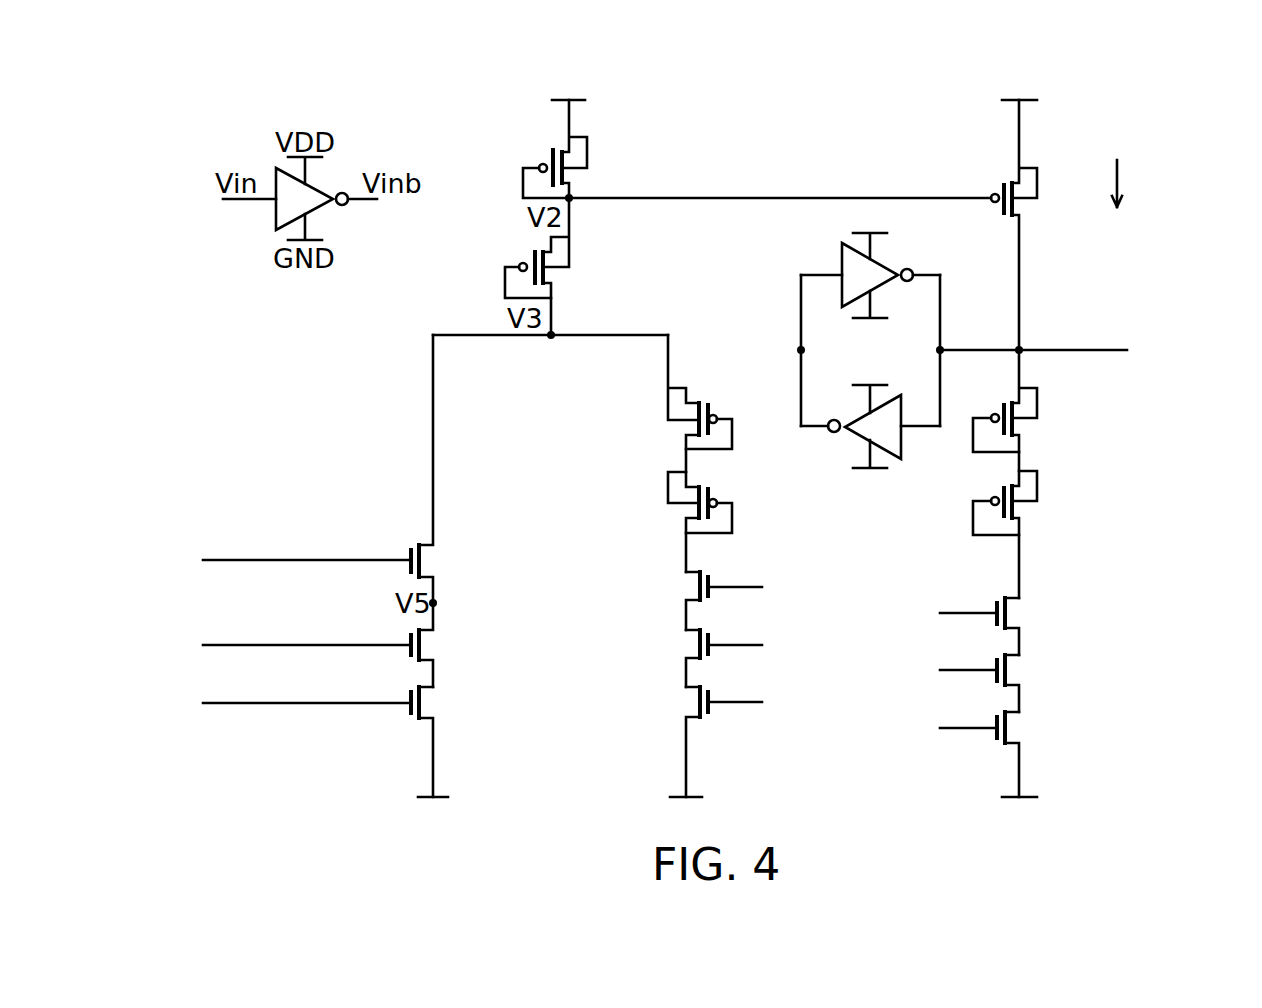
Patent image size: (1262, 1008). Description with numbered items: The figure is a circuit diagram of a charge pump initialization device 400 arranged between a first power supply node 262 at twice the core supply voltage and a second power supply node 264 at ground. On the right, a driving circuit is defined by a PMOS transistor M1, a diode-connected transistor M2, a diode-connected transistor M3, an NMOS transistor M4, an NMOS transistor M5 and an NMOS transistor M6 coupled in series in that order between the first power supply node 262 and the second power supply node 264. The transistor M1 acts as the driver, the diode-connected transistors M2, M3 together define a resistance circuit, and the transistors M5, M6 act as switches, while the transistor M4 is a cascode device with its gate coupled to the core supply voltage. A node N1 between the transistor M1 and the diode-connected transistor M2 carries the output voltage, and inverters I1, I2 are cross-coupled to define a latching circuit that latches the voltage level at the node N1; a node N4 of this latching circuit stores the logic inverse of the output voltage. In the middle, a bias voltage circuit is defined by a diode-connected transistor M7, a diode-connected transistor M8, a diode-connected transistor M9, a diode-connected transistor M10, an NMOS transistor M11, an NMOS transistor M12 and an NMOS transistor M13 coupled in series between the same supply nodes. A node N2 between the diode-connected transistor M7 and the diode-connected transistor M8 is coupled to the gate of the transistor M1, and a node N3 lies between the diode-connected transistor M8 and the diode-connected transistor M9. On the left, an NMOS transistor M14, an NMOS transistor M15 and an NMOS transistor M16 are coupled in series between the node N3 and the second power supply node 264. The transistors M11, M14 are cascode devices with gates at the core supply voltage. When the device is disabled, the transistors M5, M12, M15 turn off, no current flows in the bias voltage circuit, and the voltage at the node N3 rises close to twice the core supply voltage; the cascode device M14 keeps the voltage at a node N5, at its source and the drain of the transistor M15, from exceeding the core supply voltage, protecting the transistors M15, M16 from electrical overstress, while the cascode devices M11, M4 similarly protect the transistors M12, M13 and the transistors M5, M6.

The charge pump initialization device 400 is at (1195, 108).
The first power supply node 262 is at (572, 104).
The second power supply node 264 is at (437, 793).
The PMOS transistor M1 is at (1018, 214).
The diode-connected transistor M2 is at (1018, 431).
The diode-connected transistor M3 is at (1018, 514).
The NMOS transistor M4 is at (1022, 613).
The NMOS transistor M5 is at (1022, 670).
The NMOS transistor M6 is at (1022, 728).
The diode-connected transistor M7 is at (565, 177).
The diode-connected transistor M8 is at (549, 276).
The diode-connected transistor M9 is at (685, 425).
The diode-connected transistor M10 is at (685, 508).
The NMOS transistor M11 is at (684, 586).
The NMOS transistor M12 is at (684, 643).
The NMOS transistor M13 is at (684, 700).
The NMOS transistor M14 is at (440, 561).
The NMOS transistor M15 is at (440, 645).
The NMOS transistor M16 is at (440, 703).
The inverter I1 is at (870, 277).
The inverter I2 is at (870, 429).
The node N1 is at (1021, 348).
The node N2 is at (571, 200).
The node N3 is at (551, 340).
The node N4 is at (797, 350).
The node N5 is at (437, 603).